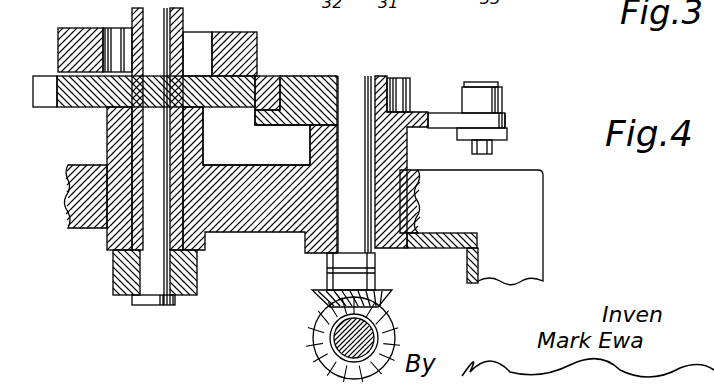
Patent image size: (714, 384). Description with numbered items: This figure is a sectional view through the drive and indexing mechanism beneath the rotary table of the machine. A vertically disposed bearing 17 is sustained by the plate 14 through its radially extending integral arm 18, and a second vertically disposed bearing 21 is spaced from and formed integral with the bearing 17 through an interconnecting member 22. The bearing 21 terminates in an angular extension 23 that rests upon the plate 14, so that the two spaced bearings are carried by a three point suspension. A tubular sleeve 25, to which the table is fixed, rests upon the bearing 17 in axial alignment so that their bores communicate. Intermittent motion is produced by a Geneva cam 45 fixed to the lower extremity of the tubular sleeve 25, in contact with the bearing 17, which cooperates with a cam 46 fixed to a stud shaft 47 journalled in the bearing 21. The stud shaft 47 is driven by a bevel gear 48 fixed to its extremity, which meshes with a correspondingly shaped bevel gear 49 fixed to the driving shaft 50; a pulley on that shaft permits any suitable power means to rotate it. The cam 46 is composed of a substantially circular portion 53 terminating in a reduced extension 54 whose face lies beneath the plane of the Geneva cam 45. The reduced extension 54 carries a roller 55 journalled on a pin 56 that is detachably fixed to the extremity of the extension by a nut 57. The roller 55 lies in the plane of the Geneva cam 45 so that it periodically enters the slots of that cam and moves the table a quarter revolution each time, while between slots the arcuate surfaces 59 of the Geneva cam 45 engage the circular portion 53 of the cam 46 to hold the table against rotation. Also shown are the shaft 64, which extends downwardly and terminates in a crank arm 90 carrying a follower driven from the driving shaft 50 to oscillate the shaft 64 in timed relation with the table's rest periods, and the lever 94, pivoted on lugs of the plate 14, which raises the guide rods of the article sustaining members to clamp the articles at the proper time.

The plate 14 is at (443, 278).
The bearing 17 is at (107, 135).
The arm 18 is at (78, 192).
The bearing 21 is at (406, 174).
The interconnecting member 22 is at (270, 177).
The angular extension 23 is at (517, 231).
The tubular sleeve 25 is at (185, 13).
The Geneva cam 45 is at (256, 82).
The cam 46 is at (316, 80).
The stud shaft 47 is at (373, 80).
The bevel gear 48 is at (320, 294).
The bevel gear 49 is at (318, 322).
The driving shaft 50 is at (325, 336).
The circular portion 53 is at (256, 118).
The reduced extension 54 is at (425, 112).
The roller 55 is at (505, 95).
The pin 56 is at (492, 152).
The nut 57 is at (496, 137).
The arcuate surface 59 is at (55, 85).
The shaft 64 is at (152, 220).
The crank arm 90 is at (122, 277).
The lever 94 is at (95, 28).